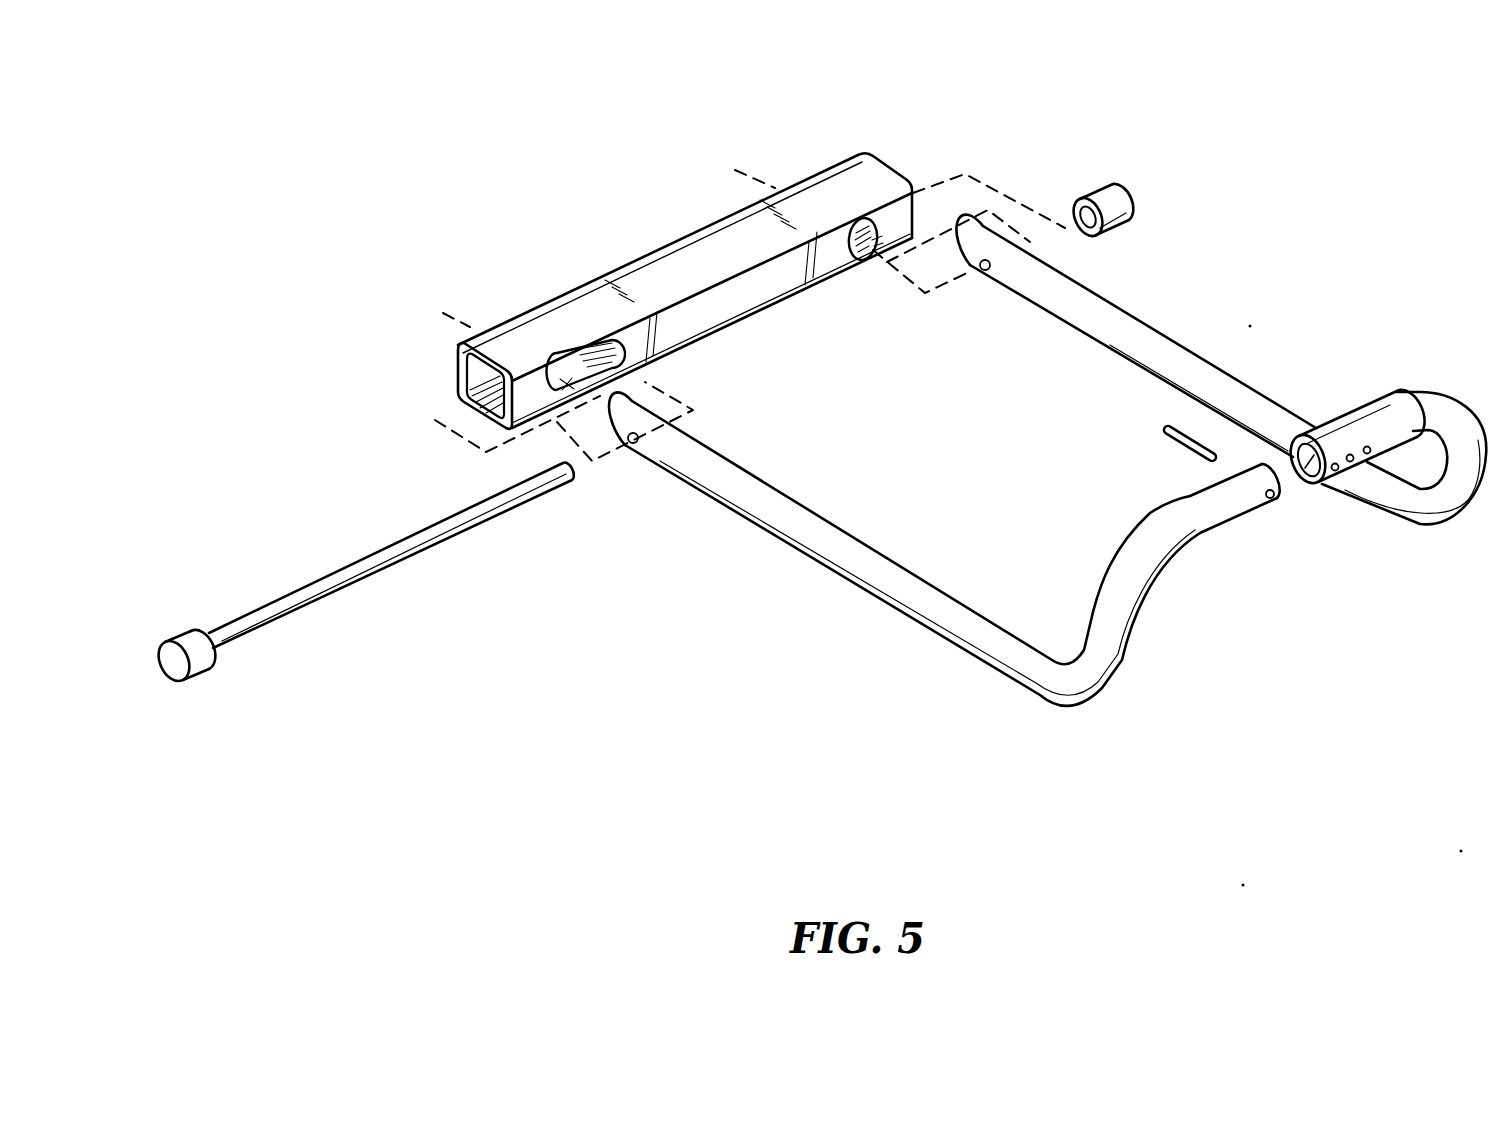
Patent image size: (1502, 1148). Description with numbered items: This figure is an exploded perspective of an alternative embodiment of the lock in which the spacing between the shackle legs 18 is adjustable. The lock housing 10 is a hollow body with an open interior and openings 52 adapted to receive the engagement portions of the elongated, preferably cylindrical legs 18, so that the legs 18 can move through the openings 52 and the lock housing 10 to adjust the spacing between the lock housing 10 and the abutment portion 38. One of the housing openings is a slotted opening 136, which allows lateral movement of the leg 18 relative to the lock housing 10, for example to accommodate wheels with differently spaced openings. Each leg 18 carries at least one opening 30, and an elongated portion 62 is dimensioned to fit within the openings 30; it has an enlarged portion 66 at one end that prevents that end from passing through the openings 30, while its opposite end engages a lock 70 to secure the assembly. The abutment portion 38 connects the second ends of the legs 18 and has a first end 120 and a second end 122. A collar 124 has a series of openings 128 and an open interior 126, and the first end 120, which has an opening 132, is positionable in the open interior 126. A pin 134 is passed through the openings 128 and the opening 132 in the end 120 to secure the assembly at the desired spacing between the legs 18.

The lock housing 10 is at (662, 245).
The legs 18 is at (958, 460).
The opening 30 is at (985, 270).
The abutment portion 38 is at (1197, 533).
The openings 52 is at (862, 218).
The elongated portion 62 is at (395, 567).
The enlarged portion 66 is at (200, 670).
The lock 70 is at (1098, 195).
The first end 120 is at (1360, 450).
The second end 122 is at (1416, 392).
The collar 124 is at (1367, 447).
The open interior 126 is at (1298, 480).
The openings 128 is at (1337, 463).
The opening 132 is at (1275, 498).
The pin 134 is at (1180, 448).
The slotted opening 136 is at (573, 364).